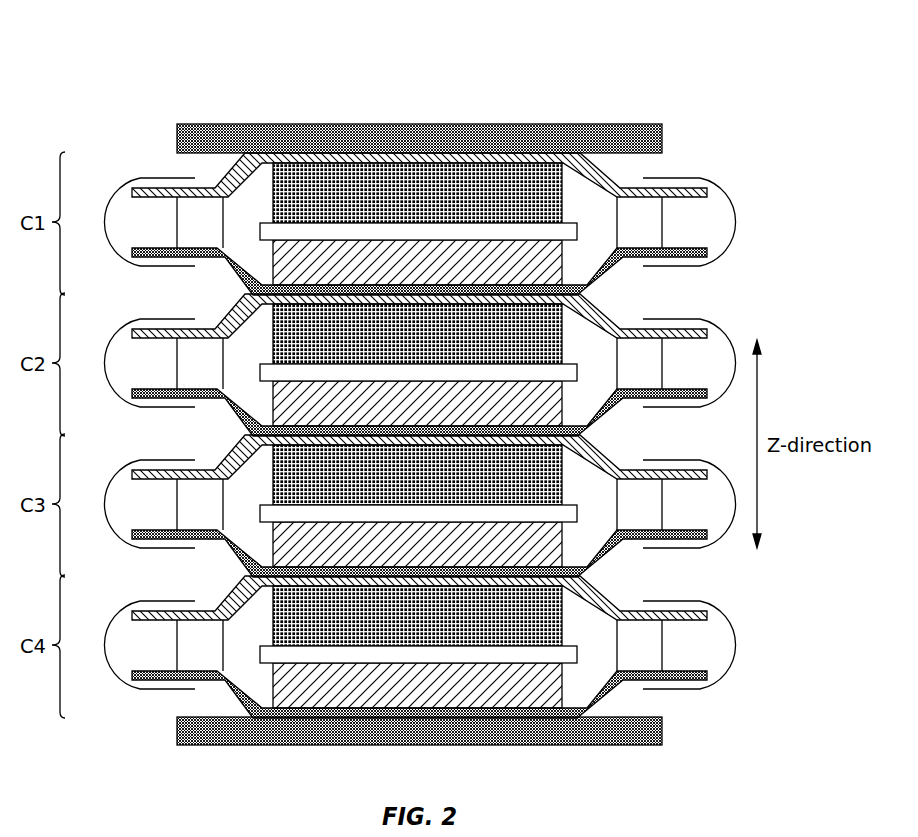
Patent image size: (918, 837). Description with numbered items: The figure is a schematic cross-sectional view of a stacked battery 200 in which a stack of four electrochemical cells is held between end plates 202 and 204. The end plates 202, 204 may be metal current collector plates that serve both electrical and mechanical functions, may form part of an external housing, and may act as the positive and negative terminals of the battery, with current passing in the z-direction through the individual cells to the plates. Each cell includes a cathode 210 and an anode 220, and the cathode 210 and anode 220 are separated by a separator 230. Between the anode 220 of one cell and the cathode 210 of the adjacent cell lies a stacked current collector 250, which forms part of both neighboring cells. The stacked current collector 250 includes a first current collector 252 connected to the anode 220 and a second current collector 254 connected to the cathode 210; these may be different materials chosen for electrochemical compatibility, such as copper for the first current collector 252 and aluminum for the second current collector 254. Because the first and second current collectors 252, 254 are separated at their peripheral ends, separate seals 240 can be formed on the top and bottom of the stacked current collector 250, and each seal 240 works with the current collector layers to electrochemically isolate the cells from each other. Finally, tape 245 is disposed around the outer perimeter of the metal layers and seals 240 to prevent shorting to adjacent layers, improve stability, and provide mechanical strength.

The stacked battery 200 is at (269, 63).
The end plate 202 is at (540, 123).
The end plate 204 is at (290, 743).
The cathode 210 is at (272, 185).
The anode 220 is at (273, 248).
The separator 230 is at (260, 657).
The seal 240 is at (662, 228).
The tape 245 is at (693, 178).
The stacked current collector 250 is at (467, 406).
The first current collector 252 is at (733, 227).
The second current collector 254 is at (795, 197).